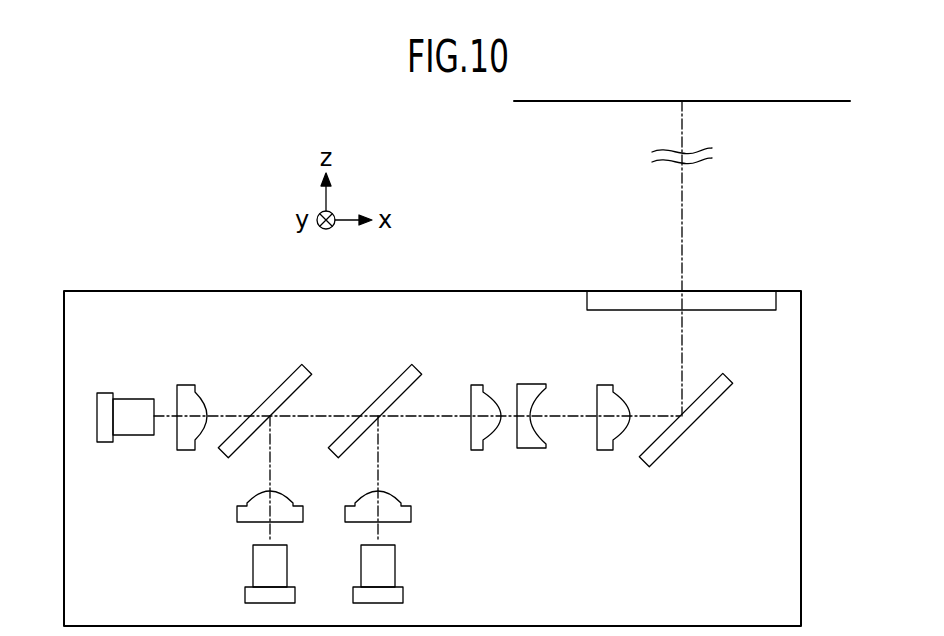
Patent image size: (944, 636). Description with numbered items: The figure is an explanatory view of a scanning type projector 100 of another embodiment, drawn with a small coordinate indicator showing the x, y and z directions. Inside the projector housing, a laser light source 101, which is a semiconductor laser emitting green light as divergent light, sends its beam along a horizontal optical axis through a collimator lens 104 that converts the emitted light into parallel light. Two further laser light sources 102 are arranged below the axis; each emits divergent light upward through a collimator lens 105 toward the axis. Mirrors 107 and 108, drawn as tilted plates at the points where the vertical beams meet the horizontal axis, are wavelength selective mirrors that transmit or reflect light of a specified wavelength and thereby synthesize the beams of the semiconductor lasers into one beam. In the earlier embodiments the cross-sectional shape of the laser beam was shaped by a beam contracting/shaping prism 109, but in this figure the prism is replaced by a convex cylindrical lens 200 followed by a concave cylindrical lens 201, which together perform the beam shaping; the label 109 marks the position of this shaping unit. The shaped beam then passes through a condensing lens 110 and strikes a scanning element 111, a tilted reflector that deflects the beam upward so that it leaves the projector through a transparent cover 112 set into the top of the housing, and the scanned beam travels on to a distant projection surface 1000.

The scanning type projector 100 is at (780, 589).
The measurement target surface 1000 is at (558, 103).
The laser light source 101 is at (130, 428).
The laser light source 102 is at (258, 565).
The collimator lens 104 is at (188, 437).
The collimator lens 105 is at (252, 513).
The mirror 107 is at (280, 385).
The mirror 108 is at (385, 385).
The beam contracting/shaping prism 109 is at (512, 416).
The convex cylindrical lens 200 is at (479, 440).
The concave cylindrical lens 201 is at (530, 440).
The condensing lens 110 is at (605, 440).
The scanning element 111 is at (675, 437).
The transparent cover 112 is at (750, 298).